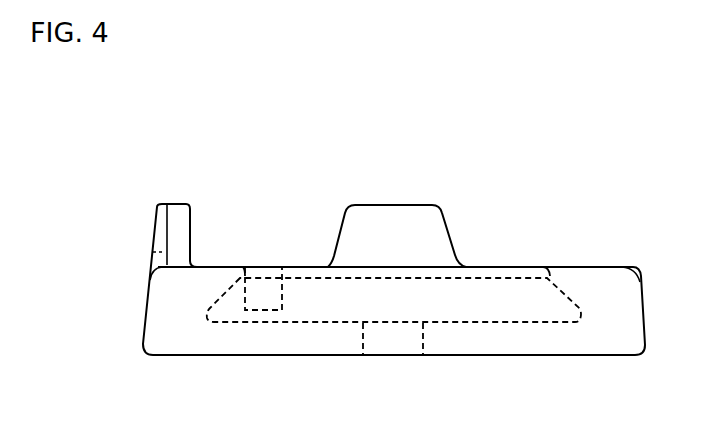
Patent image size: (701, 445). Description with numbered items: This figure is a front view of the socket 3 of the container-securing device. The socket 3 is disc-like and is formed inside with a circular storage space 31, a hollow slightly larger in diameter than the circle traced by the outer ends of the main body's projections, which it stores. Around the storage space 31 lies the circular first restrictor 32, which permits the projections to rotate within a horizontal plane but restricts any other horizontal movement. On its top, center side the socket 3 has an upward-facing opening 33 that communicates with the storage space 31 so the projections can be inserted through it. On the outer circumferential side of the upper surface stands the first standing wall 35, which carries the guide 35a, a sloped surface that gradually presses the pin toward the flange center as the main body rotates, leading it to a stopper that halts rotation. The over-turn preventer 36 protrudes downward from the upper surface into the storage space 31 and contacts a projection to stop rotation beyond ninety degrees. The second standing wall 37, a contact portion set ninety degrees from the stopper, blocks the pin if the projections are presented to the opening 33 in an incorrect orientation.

The socket 3 is at (258, 192).
The storage space 31 is at (535, 312).
The first restrictor 32 is at (575, 297).
The opening 33 is at (547, 268).
The first standing wall 35 is at (150, 206).
The guide 35a is at (178, 240).
The over-turn preventer 36 is at (262, 284).
The second standing wall 37 is at (390, 222).